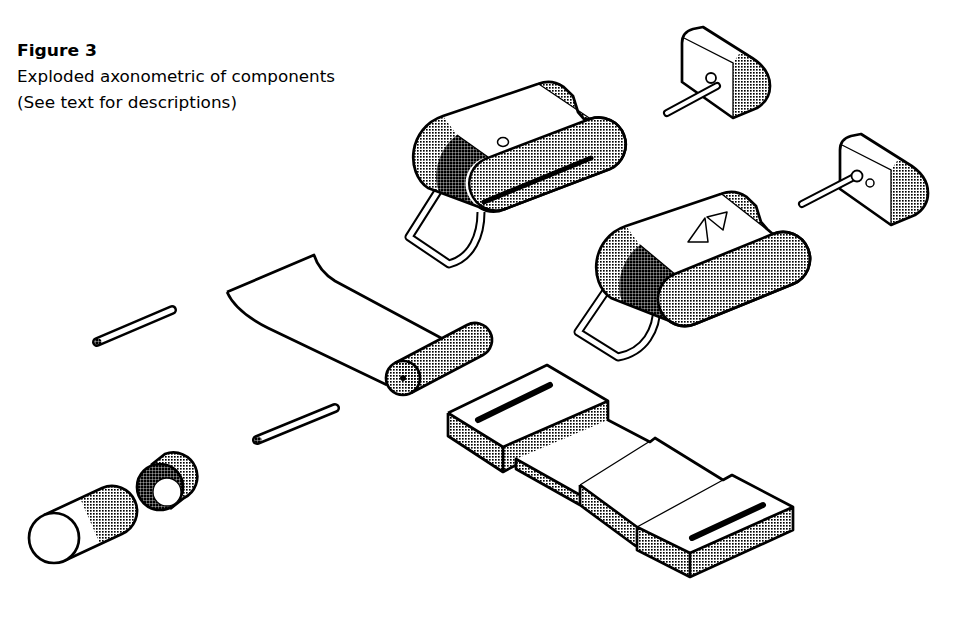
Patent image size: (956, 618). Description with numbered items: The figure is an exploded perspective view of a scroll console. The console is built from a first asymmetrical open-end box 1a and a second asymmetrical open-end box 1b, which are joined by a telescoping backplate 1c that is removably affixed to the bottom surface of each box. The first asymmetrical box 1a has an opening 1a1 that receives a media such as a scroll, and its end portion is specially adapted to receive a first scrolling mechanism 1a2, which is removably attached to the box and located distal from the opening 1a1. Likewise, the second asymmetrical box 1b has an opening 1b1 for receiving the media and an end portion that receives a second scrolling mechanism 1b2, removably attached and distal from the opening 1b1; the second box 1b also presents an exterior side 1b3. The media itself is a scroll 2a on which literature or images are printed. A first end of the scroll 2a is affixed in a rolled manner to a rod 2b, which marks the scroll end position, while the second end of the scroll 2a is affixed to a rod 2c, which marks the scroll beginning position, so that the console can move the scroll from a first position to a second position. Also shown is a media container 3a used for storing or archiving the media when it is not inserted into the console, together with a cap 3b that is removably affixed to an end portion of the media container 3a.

The first asymmetrical open-end box 1a is at (519, 140).
The opening 1a1 is at (424, 226).
The first scrolling mechanism 1a2 is at (694, 72).
The second asymmetrical open-end box 1b is at (703, 257).
The opening 1b1 is at (596, 322).
The second scrolling mechanism 1b2 is at (851, 179).
The exterior side 1b3 is at (734, 279).
The telescoping backplate 1c is at (620, 471).
The scroll 2a is at (359, 319).
The rod 2b is at (134, 320).
The rod 2c is at (291, 419).
The media container 3a is at (83, 518).
The cap 3b is at (156, 471).